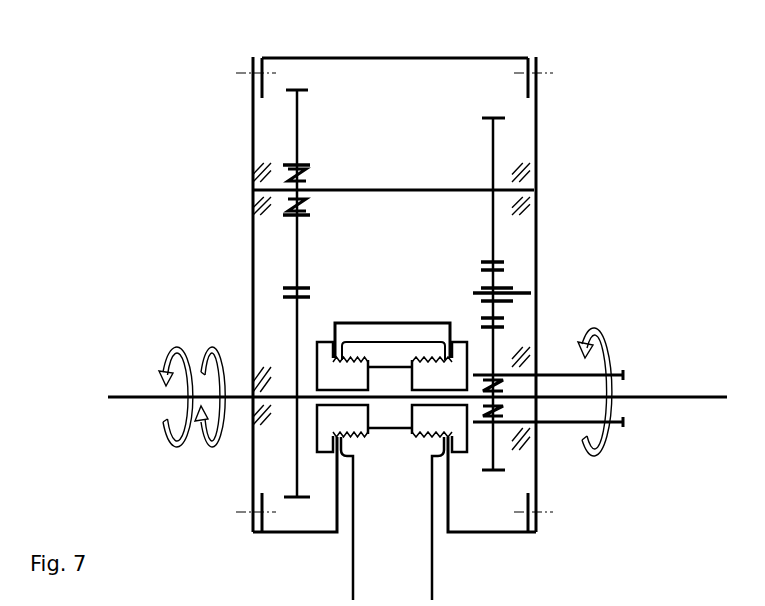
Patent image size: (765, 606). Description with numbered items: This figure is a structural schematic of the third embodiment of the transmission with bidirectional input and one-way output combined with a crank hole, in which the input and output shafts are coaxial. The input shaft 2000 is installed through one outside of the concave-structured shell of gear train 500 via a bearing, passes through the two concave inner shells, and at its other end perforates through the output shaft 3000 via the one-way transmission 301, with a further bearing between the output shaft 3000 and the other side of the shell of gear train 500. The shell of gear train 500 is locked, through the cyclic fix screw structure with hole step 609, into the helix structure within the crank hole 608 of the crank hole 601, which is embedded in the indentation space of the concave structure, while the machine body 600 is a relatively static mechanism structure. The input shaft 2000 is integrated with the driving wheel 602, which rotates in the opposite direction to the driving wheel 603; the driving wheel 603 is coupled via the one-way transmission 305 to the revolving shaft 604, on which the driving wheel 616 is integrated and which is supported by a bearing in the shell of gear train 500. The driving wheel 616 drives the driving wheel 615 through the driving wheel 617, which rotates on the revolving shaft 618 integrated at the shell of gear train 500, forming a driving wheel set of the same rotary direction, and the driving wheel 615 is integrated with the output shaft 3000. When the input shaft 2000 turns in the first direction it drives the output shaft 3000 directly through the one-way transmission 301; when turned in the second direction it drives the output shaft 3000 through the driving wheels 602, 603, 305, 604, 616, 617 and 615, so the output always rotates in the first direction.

The shell of gear train 500 is at (427, 57).
The input shaft 2000 is at (126, 393).
The output shaft 3000 is at (557, 425).
The driving wheel 603 is at (298, 117).
The one-way transmission 305 is at (308, 173).
The revolving shaft 604 is at (365, 187).
The driving wheel 602 is at (297, 317).
The driving wheel 616 is at (492, 157).
The driving wheel 615 is at (483, 475).
The driving wheel 617 is at (483, 268).
The revolving shaft 618 is at (523, 293).
The one-way transmission 301 is at (503, 385).
The crank hole 608 is at (352, 353).
The cyclic fix screw structure with hole step 609 is at (420, 380).
The crank hole 601 is at (390, 418).
The machine body 600 is at (412, 557).